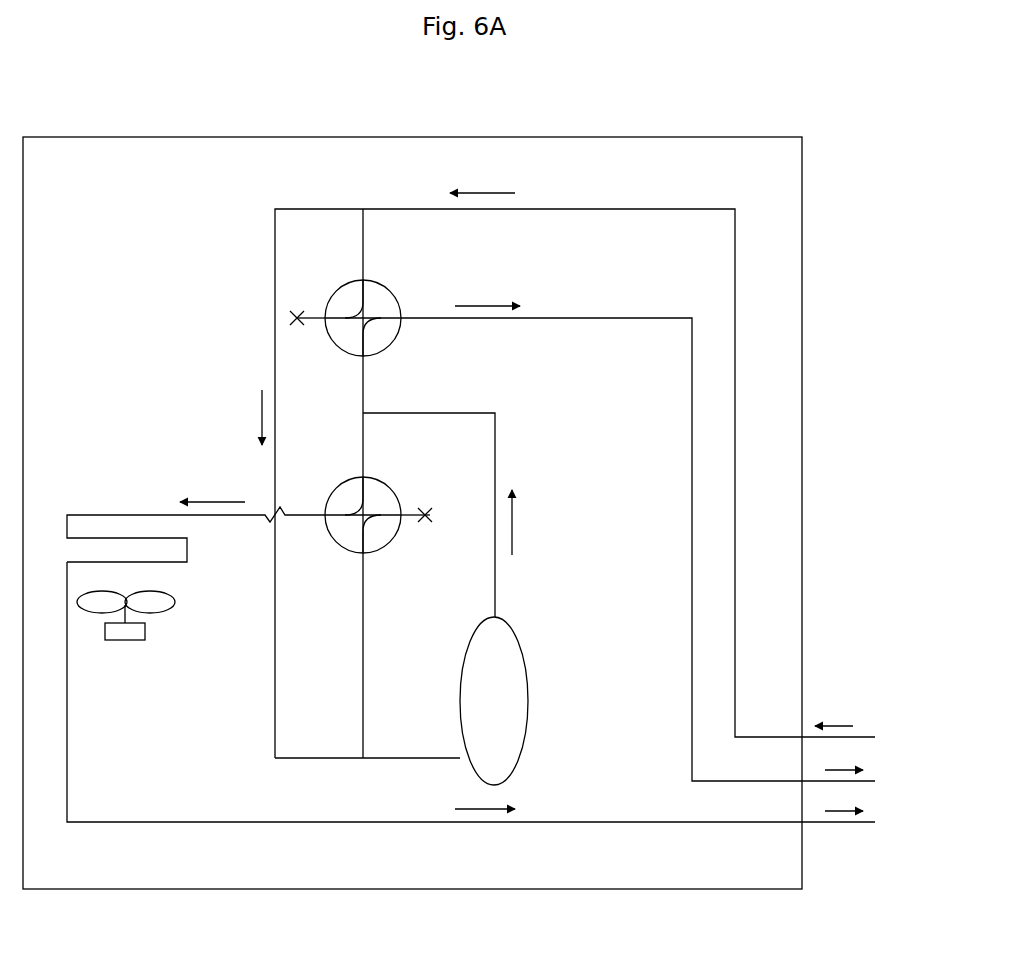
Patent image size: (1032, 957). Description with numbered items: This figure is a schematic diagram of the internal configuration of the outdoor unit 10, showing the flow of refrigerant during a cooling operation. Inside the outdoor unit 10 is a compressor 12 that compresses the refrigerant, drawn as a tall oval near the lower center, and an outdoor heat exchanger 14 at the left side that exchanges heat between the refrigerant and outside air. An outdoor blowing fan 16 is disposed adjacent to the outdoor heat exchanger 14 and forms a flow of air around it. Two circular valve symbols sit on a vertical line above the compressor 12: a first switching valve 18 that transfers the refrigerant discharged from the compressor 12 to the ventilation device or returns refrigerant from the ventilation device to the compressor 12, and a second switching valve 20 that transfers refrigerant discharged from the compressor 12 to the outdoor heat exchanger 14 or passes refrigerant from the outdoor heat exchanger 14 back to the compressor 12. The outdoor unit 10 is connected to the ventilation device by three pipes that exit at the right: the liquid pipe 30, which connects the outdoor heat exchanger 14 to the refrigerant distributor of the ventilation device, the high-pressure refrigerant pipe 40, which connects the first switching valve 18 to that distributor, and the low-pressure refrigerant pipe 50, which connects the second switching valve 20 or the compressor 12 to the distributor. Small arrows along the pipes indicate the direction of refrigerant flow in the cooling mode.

The outdoor unit 10 is at (658, 137).
The compressor 12 is at (520, 648).
The outdoor heat exchanger 14 is at (125, 538).
The outdoor blowing fan 16 is at (152, 600).
The first switching valve 18 is at (393, 293).
The second switching valve 20 is at (393, 490).
The liquid pipe 30 is at (872, 822).
The high-pressure refrigerant pipe 40 is at (872, 781).
The low-pressure refrigerant pipe 50 is at (872, 737).